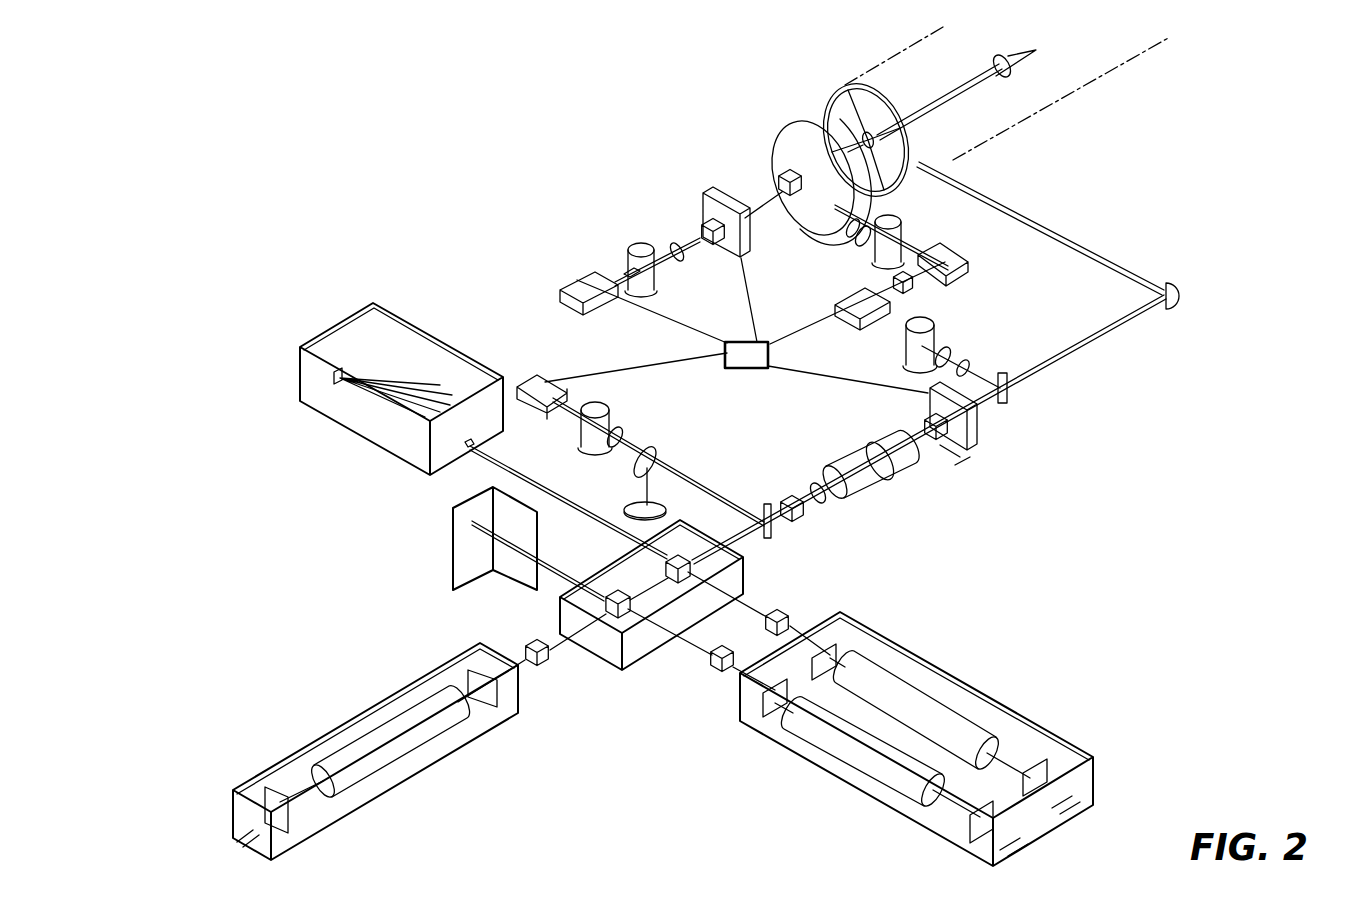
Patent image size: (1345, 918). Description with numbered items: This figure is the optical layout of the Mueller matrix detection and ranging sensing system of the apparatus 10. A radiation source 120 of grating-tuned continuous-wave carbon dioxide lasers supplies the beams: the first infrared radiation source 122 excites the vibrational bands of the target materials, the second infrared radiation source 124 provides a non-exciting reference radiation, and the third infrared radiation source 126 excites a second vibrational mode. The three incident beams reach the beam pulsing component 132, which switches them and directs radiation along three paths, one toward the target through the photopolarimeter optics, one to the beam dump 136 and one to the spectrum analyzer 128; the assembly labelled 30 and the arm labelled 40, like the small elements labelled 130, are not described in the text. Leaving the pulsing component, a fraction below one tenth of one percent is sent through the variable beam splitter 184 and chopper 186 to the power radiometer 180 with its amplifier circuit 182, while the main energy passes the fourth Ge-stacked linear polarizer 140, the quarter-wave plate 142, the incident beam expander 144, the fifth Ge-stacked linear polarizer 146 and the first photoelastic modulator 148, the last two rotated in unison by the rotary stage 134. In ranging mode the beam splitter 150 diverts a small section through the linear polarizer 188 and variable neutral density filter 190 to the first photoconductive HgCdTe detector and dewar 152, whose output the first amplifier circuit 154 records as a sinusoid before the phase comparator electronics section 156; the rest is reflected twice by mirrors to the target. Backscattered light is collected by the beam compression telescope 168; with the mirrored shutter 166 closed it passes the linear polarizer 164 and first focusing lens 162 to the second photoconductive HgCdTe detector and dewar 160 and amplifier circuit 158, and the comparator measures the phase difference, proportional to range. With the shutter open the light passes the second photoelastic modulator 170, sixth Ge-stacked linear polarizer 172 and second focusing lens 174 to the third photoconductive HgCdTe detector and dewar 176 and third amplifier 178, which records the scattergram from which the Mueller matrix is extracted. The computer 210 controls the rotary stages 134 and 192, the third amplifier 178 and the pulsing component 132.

The apparatus 10 is at (590, 121).
The beam chopper assembly 30 is at (754, 107).
The detection arm assembly 40 is at (551, 297).
The radiation source 120 is at (679, 758).
The first infrared radiation source 122 is at (372, 765).
The second infrared radiation source 124 is at (870, 772).
The third infrared radiation source 126 is at (940, 705).
The spectrum analyzer 128 is at (400, 316).
The polarizer 130 is at (540, 668).
The beam pulsing component 132 is at (600, 665).
The rotary stage 134 is at (975, 452).
The beam dump 136 is at (450, 580).
The fourth Ge-stacked linear polarizer 140 is at (800, 522).
The quarter-wave plate 142 is at (860, 510).
The incident beam expander 144 is at (903, 463).
The fifth Ge-stacked linear polarizer 146 is at (945, 445).
The first photoelastic modulator 148 is at (980, 425).
The beam splitter 150 is at (1060, 392).
The first photoconductive HgCdTe detector and dewar 152 is at (940, 312).
The first amplifier circuit 154 is at (837, 320).
The phase comparator electronics section 156 is at (918, 288).
The amplifier circuit 158 is at (950, 278).
The second photoconductive HgCdTe detector and dewar 160 is at (905, 242).
The first focusing lens 162 is at (858, 262).
The linear polarizer 164 is at (930, 197).
The mirrored shutter 166 is at (777, 140).
The beam compression telescope 168 is at (790, 112).
The second photoelastic modulator 170 is at (728, 193).
The sixth Ge-stacked linear polarizer 172 is at (700, 228).
The second focusing lens 174 is at (681, 262).
The third photoconductive HgCdTe detector and dewar 176 is at (652, 300).
The third amplifier 178 is at (598, 275).
The power radiometer 180 is at (598, 398).
The amplifier circuit 182 is at (530, 380).
The variable beam splitter 184 is at (630, 440).
The chopper 186 is at (670, 450).
The linear polarizer 188 is at (984, 358).
The variable neutral density filter 190 is at (973, 358).
The rotary stage 192 is at (710, 205).
The computer 210 is at (745, 372).